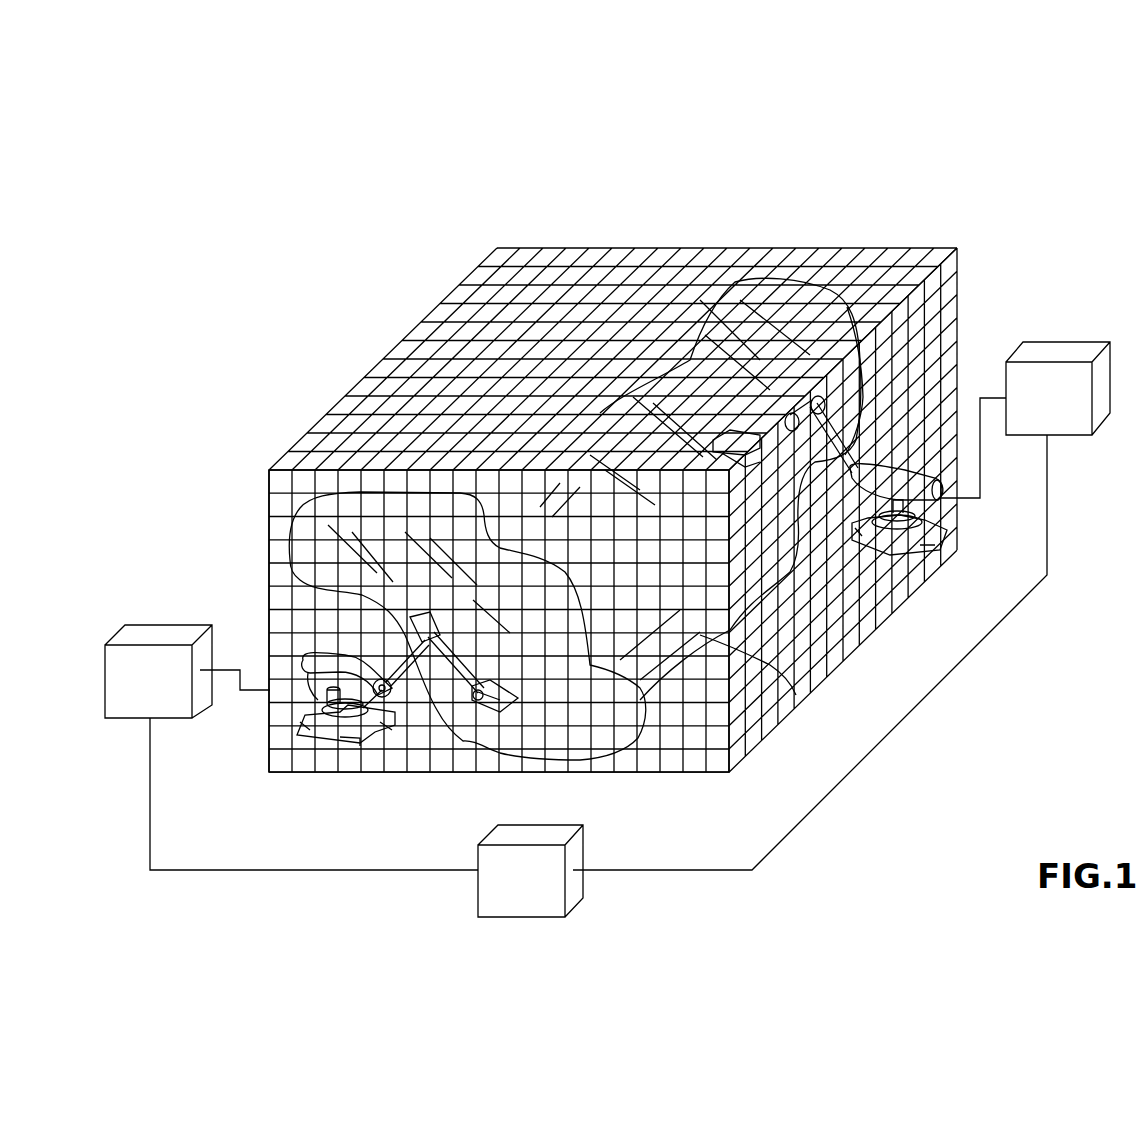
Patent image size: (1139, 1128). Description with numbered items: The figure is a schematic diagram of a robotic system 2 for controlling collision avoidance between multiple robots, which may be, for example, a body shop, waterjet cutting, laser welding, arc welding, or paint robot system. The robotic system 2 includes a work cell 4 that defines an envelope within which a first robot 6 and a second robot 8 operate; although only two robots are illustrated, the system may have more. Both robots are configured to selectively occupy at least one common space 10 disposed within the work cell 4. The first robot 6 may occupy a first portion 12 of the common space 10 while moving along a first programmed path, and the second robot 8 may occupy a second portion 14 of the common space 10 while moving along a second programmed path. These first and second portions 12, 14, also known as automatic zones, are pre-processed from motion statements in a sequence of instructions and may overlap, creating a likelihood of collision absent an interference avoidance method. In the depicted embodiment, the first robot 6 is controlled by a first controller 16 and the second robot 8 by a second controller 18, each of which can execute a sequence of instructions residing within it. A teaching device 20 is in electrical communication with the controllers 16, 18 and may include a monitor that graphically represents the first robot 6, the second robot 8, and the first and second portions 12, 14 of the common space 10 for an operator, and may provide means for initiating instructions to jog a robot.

The robotic system 2 is at (386, 214).
The work cell 4 is at (857, 246).
The first robot 6 is at (312, 775).
The second robot 8 is at (880, 580).
The common space 10 is at (445, 410).
The first portion 12 is at (463, 742).
The second portion 14 is at (790, 683).
The first controller 16 is at (157, 637).
The second controller 18 is at (1055, 355).
The teaching device 20 is at (490, 832).